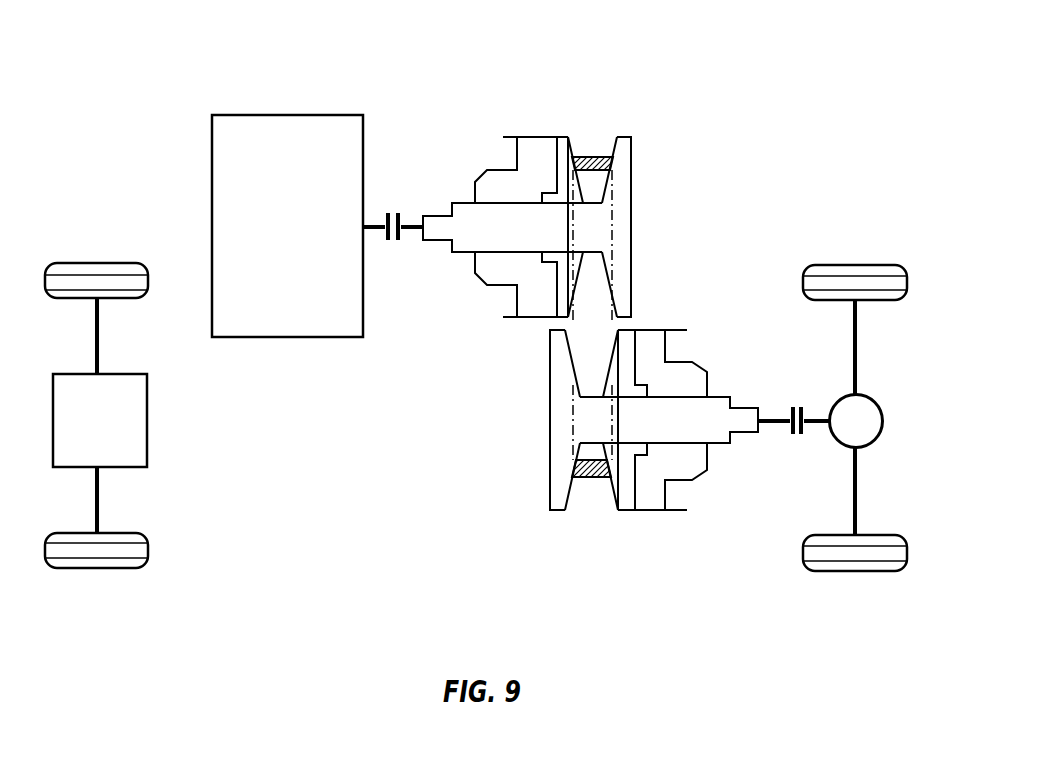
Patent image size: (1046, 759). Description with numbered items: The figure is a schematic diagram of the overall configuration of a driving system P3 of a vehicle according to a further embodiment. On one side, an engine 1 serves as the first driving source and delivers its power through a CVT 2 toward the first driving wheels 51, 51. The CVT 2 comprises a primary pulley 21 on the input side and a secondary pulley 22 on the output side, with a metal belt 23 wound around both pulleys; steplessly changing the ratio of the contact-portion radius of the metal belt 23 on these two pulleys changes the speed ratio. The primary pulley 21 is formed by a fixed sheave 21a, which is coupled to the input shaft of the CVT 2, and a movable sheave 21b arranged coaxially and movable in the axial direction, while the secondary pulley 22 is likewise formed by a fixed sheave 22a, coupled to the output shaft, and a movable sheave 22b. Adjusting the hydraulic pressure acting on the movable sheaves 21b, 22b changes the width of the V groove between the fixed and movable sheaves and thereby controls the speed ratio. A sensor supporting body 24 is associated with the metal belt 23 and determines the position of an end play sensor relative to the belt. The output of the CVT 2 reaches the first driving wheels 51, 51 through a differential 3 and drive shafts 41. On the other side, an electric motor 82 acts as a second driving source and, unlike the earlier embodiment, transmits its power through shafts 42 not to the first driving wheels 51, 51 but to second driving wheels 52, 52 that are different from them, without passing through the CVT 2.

The engine 1 is at (291, 115).
The CVT 2 is at (492, 110).
The differential gear 3 is at (884, 421).
The primary pulley 21 is at (483, 171).
The fixed sheave 21a is at (632, 137).
The movable sheave 21b is at (557, 137).
The secondary pulley 22 is at (703, 472).
The fixed sheave 22a is at (552, 512).
The movable sheave 22b is at (627, 512).
The metal belt 23 is at (605, 157).
The sensor supporting body 24 is at (601, 238).
The drive shaft 41 is at (858, 351).
The drive shaft 42 is at (99, 349).
The first driving wheels 51 is at (907, 283).
The second driving wheels 52 is at (148, 277).
The electric motor 82 is at (148, 423).
The driving system P3 is at (797, 108).